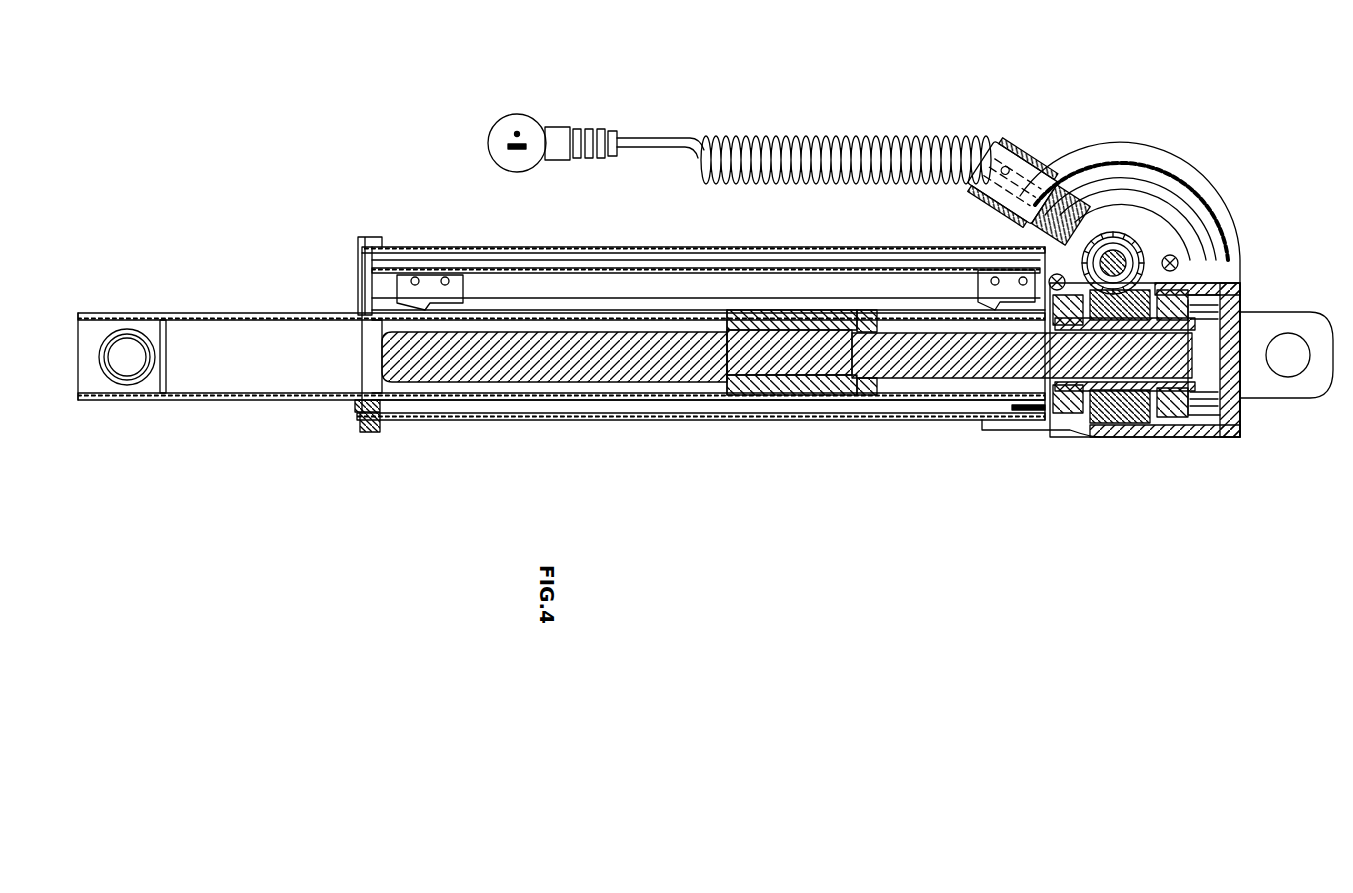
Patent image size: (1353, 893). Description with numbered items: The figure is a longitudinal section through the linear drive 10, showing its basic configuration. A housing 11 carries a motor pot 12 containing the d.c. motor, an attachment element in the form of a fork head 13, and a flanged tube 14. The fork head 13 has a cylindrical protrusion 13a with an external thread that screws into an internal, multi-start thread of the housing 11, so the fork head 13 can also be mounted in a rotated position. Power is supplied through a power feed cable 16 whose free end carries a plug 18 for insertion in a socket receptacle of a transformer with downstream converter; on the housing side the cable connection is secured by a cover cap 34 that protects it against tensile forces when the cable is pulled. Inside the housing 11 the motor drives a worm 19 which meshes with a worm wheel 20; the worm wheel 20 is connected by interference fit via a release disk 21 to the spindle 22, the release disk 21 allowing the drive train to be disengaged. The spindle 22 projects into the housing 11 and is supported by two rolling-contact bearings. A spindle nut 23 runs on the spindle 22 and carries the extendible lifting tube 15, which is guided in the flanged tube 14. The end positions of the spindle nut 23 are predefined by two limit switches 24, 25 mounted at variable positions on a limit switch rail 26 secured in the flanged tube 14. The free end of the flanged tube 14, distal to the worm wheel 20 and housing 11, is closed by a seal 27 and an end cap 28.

The linear drive 10 is at (447, 218).
The housing 11 is at (1127, 437).
The motor pot 12 is at (1198, 152).
The fork head 13 is at (1293, 322).
The cylindrical protrusion 13a is at (1247, 285).
The flanged tube 14 is at (606, 246).
The lifting tube 15 is at (215, 403).
The power feed cable 16 is at (830, 135).
The plug 18 is at (532, 138).
The worm 19 is at (1123, 260).
The worm wheel 20 is at (1083, 427).
The release disk 21 is at (1137, 437).
The spindle 22 is at (900, 378).
The spindle nut 23 is at (727, 403).
The limit switch 24 is at (430, 285).
The limit switch 25 is at (985, 290).
The limit switch rail 26 is at (508, 246).
The seal 27 is at (362, 262).
The end cap 28 is at (362, 300).
The cover cap 34 is at (1008, 135).